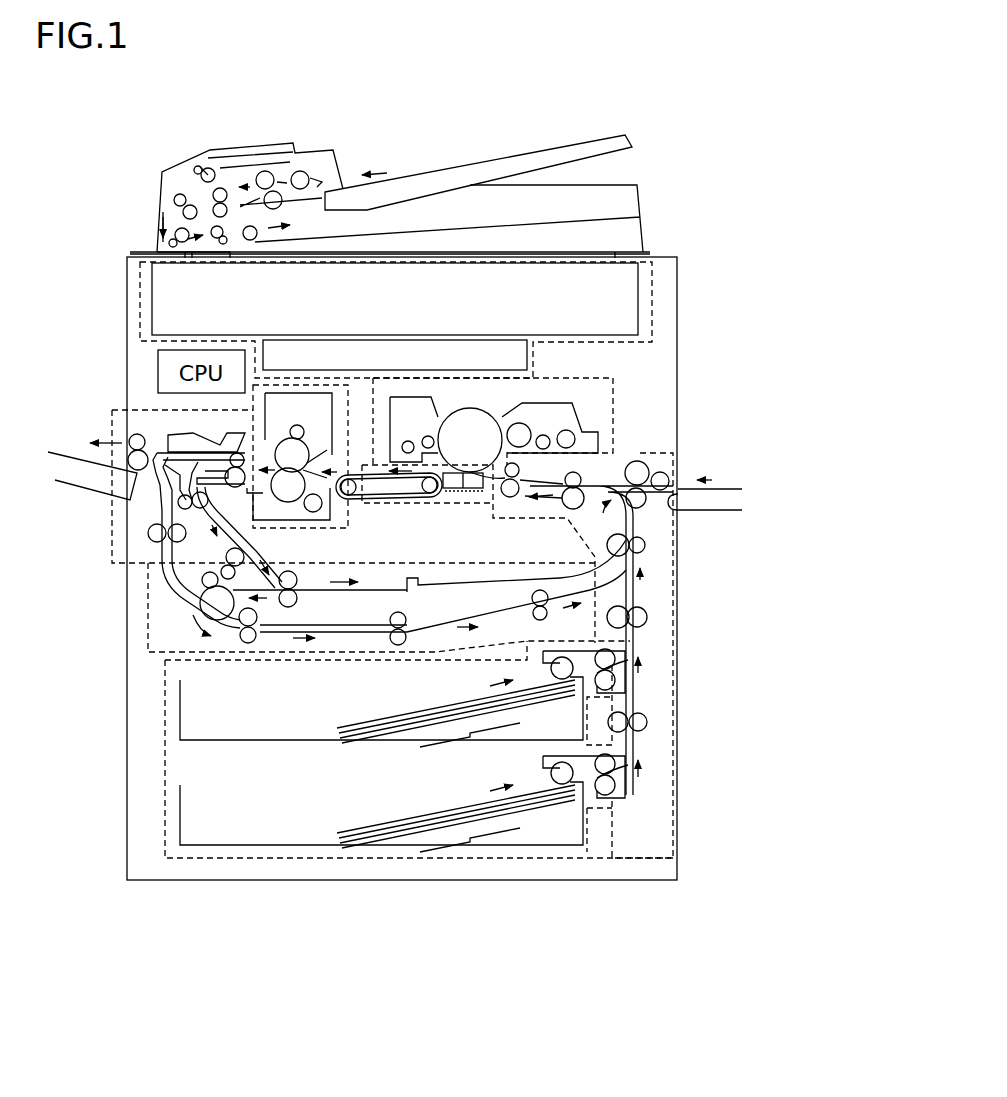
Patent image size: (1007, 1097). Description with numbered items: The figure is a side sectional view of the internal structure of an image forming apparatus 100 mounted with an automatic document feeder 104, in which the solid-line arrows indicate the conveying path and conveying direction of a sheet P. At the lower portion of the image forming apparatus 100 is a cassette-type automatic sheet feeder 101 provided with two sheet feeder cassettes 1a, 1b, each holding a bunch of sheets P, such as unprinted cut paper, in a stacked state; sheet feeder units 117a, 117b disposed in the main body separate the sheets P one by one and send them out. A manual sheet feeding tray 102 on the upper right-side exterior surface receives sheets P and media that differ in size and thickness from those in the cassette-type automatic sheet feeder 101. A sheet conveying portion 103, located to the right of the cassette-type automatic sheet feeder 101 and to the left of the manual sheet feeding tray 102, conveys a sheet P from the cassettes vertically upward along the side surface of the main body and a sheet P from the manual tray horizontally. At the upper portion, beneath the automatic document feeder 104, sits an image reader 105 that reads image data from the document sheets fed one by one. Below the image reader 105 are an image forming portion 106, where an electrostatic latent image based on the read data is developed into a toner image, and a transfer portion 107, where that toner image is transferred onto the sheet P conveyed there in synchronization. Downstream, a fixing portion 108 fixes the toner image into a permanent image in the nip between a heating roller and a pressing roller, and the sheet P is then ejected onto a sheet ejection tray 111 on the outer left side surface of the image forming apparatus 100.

The image forming apparatus 100 is at (673, 152).
The cassette-type automatic sheet feeder 101 is at (165, 831).
The manual sheet feeding tray 102 is at (742, 492).
The sheet conveying portion 103 is at (640, 448).
The automatic document feeder 104 is at (437, 172).
The image reader 105 is at (653, 325).
The image forming portion 106 is at (563, 378).
The transfer portion 107 is at (475, 507).
The fixing portion 108 is at (310, 528).
The sheet ejection tray 111 is at (65, 487).
The sheet feeder unit 117a is at (630, 658).
The sheet feeder unit 117b is at (628, 770).
The sheet feeder cassette 1a is at (180, 707).
The sheet feeder cassette 1b is at (180, 805).
The sheet P is at (387, 834).